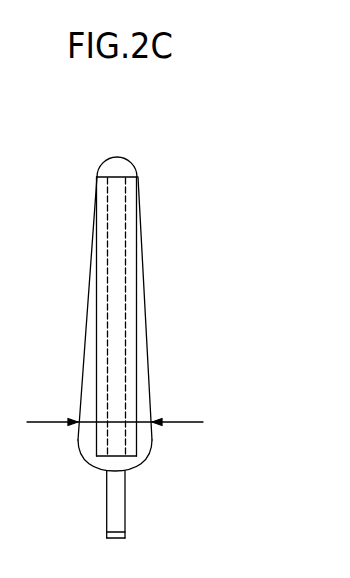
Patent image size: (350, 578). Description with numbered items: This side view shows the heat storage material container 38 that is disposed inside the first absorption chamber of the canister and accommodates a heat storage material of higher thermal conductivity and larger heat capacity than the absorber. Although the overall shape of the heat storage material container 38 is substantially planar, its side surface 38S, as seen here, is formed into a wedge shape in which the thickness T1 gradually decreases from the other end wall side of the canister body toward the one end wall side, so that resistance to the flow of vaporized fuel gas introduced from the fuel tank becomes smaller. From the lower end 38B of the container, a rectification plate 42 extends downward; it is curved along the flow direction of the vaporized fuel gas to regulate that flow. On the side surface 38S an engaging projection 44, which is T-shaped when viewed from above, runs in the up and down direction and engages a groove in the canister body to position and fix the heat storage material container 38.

The heat storage material container 38 is at (108, 315).
The engaging projection 44 is at (132, 310).
The side surface 38S is at (90, 352).
The lower end 38B is at (90, 473).
The rectification plate 42 is at (118, 503).
The thickness T1 is at (117, 425).